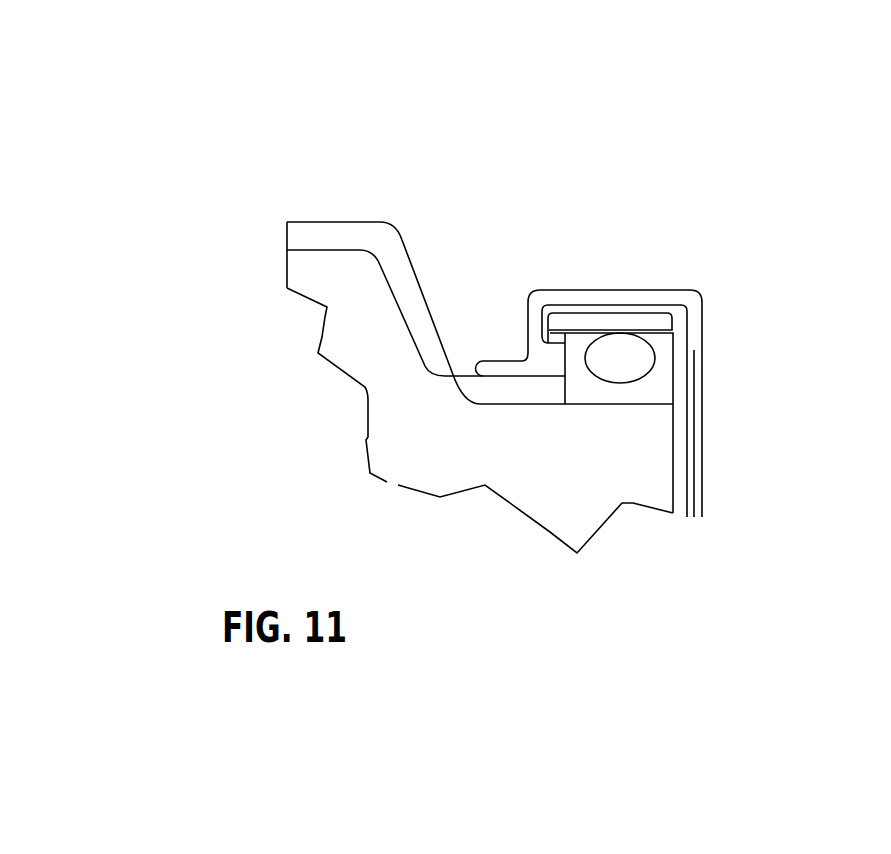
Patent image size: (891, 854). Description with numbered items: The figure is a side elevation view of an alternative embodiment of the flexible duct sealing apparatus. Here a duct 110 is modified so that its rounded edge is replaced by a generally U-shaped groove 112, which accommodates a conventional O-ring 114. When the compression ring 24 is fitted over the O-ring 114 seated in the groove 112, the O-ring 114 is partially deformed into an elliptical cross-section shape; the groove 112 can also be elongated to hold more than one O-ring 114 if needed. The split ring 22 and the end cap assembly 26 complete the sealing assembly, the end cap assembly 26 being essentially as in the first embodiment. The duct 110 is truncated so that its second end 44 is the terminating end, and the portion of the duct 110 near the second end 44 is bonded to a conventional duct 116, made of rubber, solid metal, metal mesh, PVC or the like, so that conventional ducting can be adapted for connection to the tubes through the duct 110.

The duct 110 is at (392, 227).
The second end 44 is at (325, 240).
The conventional duct 116 is at (298, 270).
The split ring 22 is at (510, 358).
The end cap assembly 26 is at (690, 288).
The compression ring 24 is at (619, 313).
The U-shaped groove 112 is at (580, 335).
The O-ring 114 is at (622, 358).